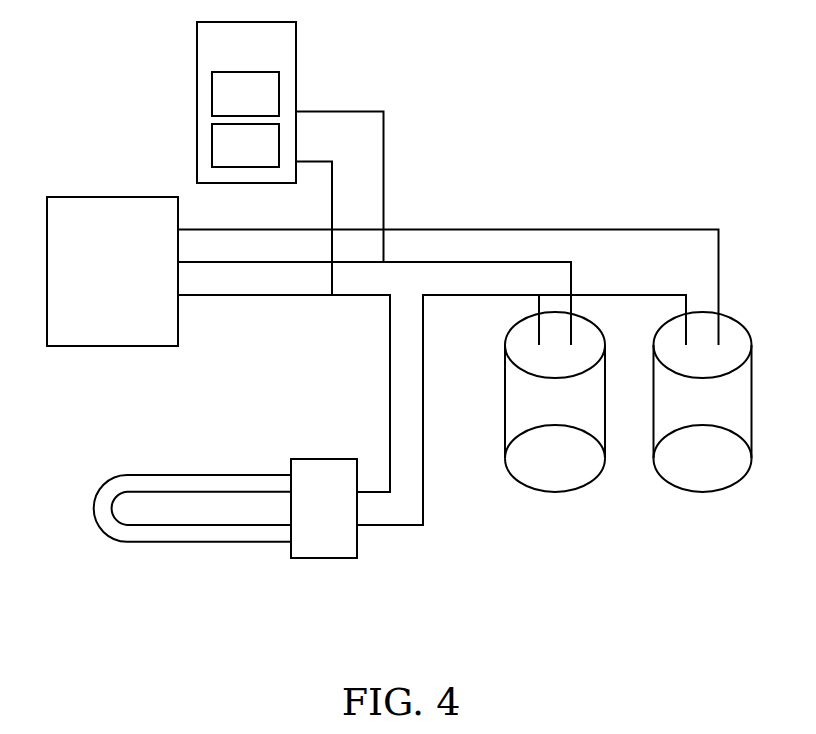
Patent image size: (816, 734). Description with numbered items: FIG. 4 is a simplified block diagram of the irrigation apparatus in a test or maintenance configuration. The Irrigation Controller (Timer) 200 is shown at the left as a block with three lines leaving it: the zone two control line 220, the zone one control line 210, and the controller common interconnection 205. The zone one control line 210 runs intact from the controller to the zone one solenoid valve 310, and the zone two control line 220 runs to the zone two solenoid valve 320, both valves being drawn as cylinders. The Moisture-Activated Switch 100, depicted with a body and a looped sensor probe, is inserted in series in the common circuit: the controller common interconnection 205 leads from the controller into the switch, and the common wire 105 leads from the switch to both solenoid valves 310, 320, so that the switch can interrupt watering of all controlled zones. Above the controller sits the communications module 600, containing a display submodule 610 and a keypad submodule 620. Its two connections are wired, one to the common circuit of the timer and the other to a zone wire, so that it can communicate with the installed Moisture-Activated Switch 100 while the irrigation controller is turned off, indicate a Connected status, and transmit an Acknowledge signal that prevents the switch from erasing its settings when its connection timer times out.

The Moisture-Activated Switch 100 is at (225, 502).
The common wire 105 is at (487, 297).
The Irrigation Controller (Timer) 200 is at (112, 271).
The Controller common interconnection 205 is at (272, 294).
The Zone 1 Control 210 is at (272, 261).
The Zone 2 Control 220 is at (272, 228).
The Zone 1 Solenoid Valve 310 is at (536, 437).
The Zone 2 Solenoid Valve 320 is at (687, 437).
The communications module 600 is at (230, 52).
The display submodule 610 is at (245, 94).
The keypad submodule 620 is at (245, 145).